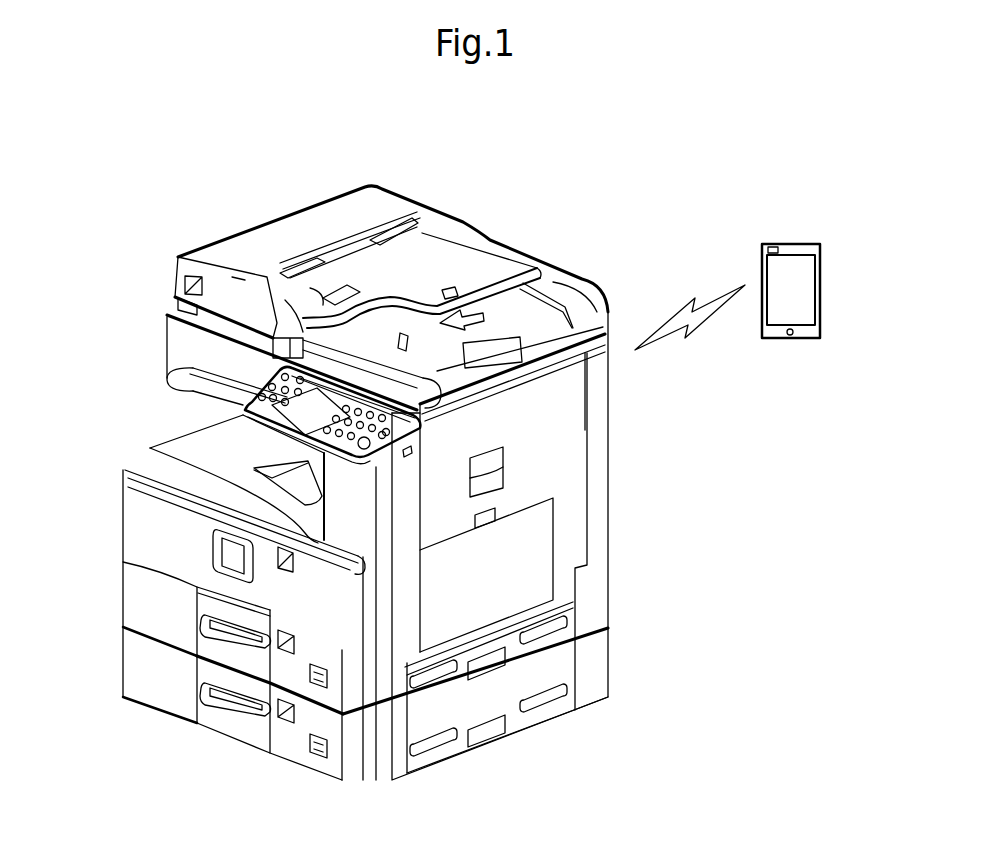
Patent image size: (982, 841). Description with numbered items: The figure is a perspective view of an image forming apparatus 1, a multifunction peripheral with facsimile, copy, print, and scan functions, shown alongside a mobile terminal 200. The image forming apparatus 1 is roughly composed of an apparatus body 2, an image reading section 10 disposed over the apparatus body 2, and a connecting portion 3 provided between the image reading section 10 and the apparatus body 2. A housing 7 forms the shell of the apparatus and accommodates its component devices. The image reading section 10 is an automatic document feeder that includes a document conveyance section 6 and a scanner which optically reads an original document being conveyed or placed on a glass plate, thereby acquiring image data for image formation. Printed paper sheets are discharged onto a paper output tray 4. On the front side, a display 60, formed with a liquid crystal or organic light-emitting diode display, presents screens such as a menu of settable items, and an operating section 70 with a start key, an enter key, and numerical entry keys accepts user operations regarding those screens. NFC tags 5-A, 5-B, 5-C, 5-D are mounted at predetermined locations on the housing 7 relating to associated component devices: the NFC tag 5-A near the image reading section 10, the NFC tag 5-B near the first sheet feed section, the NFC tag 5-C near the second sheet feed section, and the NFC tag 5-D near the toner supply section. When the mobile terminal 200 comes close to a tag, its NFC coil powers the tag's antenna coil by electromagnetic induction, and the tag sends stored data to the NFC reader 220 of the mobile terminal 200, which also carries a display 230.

The image forming apparatus 1 is at (536, 150).
The apparatus body 2 is at (628, 548).
The connecting portion 3 is at (360, 524).
The paper output tray 4 is at (163, 450).
The NFC tag 5-A is at (185, 283).
The NFC tag 5-B is at (287, 652).
The NFC tag 5-C is at (287, 720).
The NFC tag 5-D is at (277, 557).
The document conveyance section 6 is at (514, 228).
The housing 7 is at (577, 566).
The image reading section 10 is at (612, 288).
The display 60 is at (250, 414).
The operating section 70 is at (240, 401).
The mobile terminal 200 is at (830, 230).
The NFC reader 220 is at (773, 248).
The display 230 is at (815, 297).